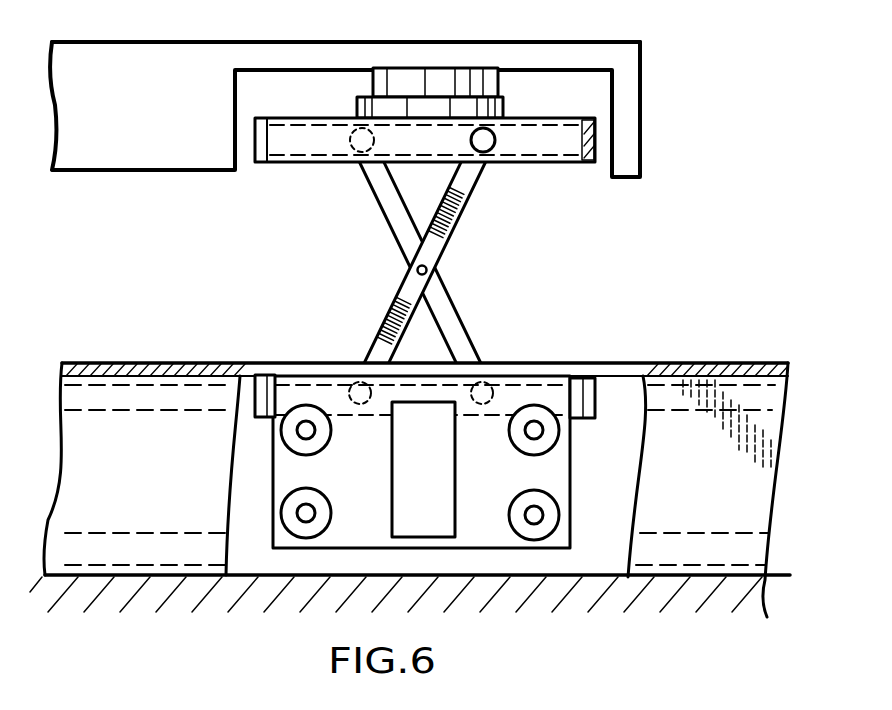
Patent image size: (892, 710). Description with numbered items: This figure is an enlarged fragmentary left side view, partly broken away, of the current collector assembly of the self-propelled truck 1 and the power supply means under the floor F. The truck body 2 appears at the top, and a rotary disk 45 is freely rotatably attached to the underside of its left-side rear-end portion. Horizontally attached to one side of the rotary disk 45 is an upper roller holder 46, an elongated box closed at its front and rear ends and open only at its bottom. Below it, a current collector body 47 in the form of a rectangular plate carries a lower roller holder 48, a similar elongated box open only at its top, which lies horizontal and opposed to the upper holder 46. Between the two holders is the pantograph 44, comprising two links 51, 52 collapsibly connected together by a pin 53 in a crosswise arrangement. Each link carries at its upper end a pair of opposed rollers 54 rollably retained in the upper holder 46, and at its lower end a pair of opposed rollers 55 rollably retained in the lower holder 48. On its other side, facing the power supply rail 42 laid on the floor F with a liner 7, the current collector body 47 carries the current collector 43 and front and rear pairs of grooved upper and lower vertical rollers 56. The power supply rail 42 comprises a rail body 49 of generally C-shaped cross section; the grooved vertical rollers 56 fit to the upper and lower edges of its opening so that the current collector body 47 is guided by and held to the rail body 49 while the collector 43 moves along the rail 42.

The self-propelled truck 1 is at (648, 52).
The truck body 2 is at (195, 41).
The liner 7 is at (578, 4).
The power supply rail 42 is at (828, 483).
The current collector 43 is at (403, 485).
The pantograph 44 is at (400, 233).
The rotary disk 45 is at (500, 108).
The upper roller holder 46 is at (290, 152).
The current collector body 47 is at (560, 540).
The lower roller holder 48 is at (268, 380).
The rail body 49 is at (750, 507).
The link 51 is at (455, 322).
The link 52 is at (463, 194).
The pin 53 is at (428, 271).
The rollers 54 is at (357, 153).
The rollers 55 is at (345, 385).
The vertical rollers 56 is at (545, 500).
The floor F is at (620, 363).